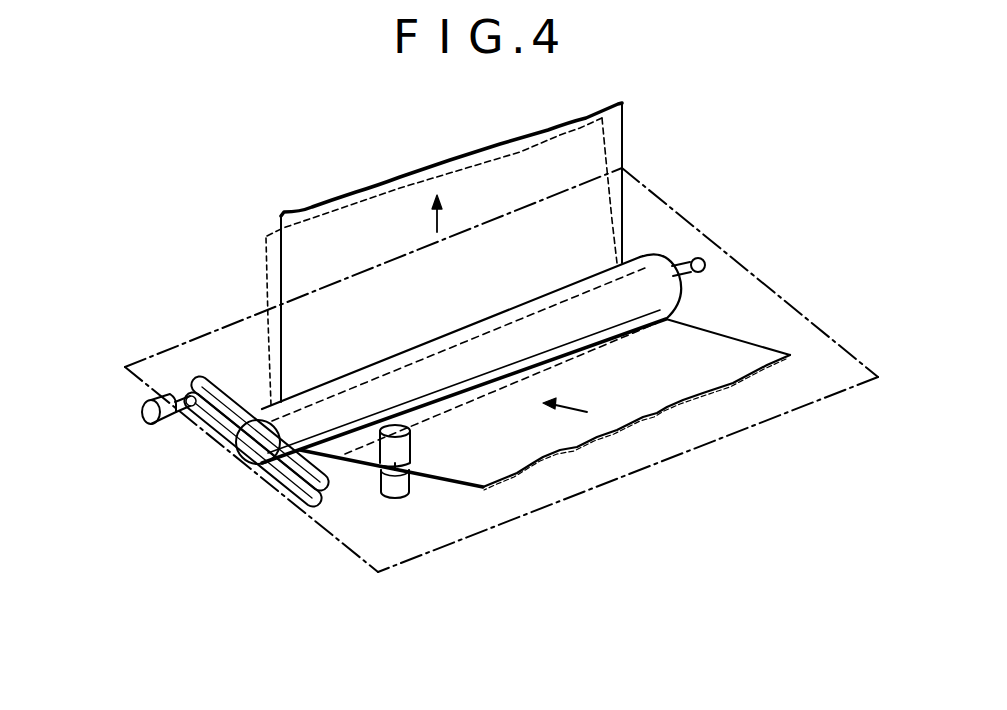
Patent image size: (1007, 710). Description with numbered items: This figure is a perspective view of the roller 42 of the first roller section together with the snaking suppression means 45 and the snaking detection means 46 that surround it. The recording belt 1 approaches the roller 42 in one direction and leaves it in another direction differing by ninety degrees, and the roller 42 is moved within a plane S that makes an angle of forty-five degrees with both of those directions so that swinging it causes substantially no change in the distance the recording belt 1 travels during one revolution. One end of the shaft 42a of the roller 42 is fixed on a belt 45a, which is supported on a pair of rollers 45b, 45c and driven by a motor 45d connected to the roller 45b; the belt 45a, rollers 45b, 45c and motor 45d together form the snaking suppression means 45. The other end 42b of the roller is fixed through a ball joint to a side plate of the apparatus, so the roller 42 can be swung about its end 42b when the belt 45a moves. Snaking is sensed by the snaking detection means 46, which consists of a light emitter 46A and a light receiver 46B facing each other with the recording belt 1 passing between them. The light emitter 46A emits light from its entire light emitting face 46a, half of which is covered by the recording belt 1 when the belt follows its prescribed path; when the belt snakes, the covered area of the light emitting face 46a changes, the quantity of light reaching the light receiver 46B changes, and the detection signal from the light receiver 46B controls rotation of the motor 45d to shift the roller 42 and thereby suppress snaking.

The recording belt 1 is at (623, 132).
The roller 42 is at (375, 362).
The shaft 42a is at (243, 447).
The other end 42b is at (705, 262).
The snaking suppression means 45 is at (187, 441).
The belt 45a is at (276, 486).
The roller 45b is at (186, 410).
The roller 45c is at (311, 499).
The motor 45d is at (140, 413).
The snaking detection means 46 is at (423, 535).
The light emitter 46A is at (400, 500).
The light receiver 46B is at (413, 440).
The light emitting face 46a is at (452, 526).
The plane S is at (830, 330).